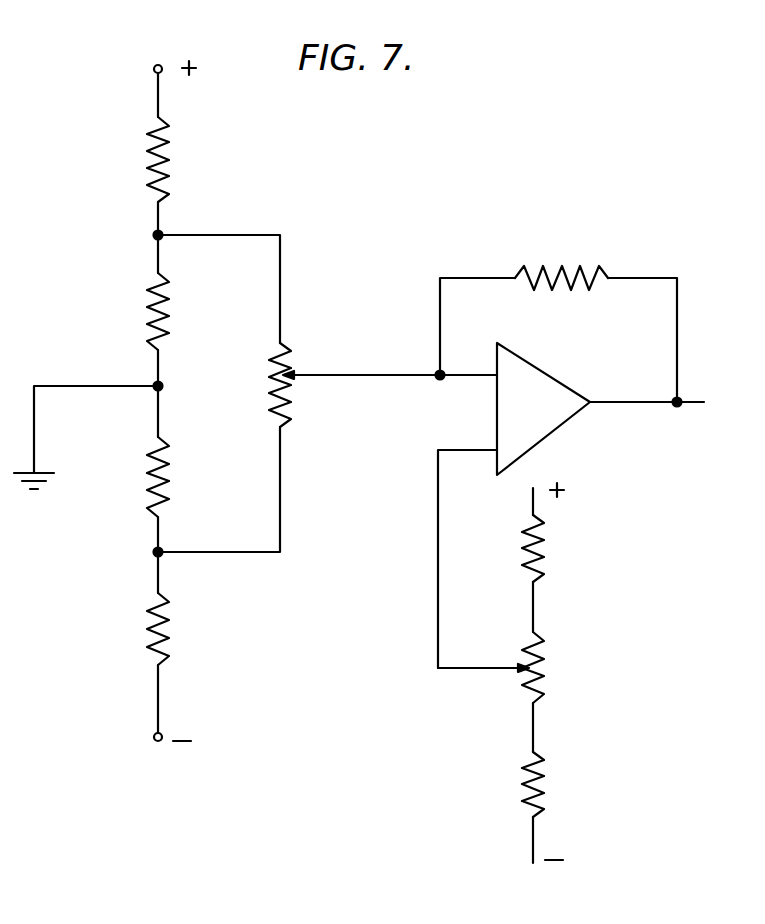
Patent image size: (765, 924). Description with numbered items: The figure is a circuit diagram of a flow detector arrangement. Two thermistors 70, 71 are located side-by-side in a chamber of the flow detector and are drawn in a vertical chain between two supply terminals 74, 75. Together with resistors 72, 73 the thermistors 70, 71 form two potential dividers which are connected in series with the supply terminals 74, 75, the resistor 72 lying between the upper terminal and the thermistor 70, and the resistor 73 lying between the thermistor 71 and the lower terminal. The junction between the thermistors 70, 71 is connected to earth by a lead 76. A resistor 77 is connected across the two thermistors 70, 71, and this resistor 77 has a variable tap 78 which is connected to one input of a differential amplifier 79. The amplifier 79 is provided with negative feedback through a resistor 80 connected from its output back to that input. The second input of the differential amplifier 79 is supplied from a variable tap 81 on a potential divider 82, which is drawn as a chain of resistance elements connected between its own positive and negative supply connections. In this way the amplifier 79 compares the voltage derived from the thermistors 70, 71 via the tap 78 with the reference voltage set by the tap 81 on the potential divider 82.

The thermistor 70 is at (172, 311).
The thermistor 71 is at (172, 468).
The resistor 72 is at (168, 166).
The resistor 73 is at (169, 625).
The supply terminal 74 is at (158, 64).
The supply terminal 75 is at (153, 737).
The lead 76 is at (88, 386).
The resistor 77 is at (290, 356).
The variable tap 78 is at (299, 378).
The differential amplifier 79 is at (537, 422).
The resistor 80 is at (557, 266).
The variable tap 81 is at (513, 676).
The potential divider 82 is at (543, 650).